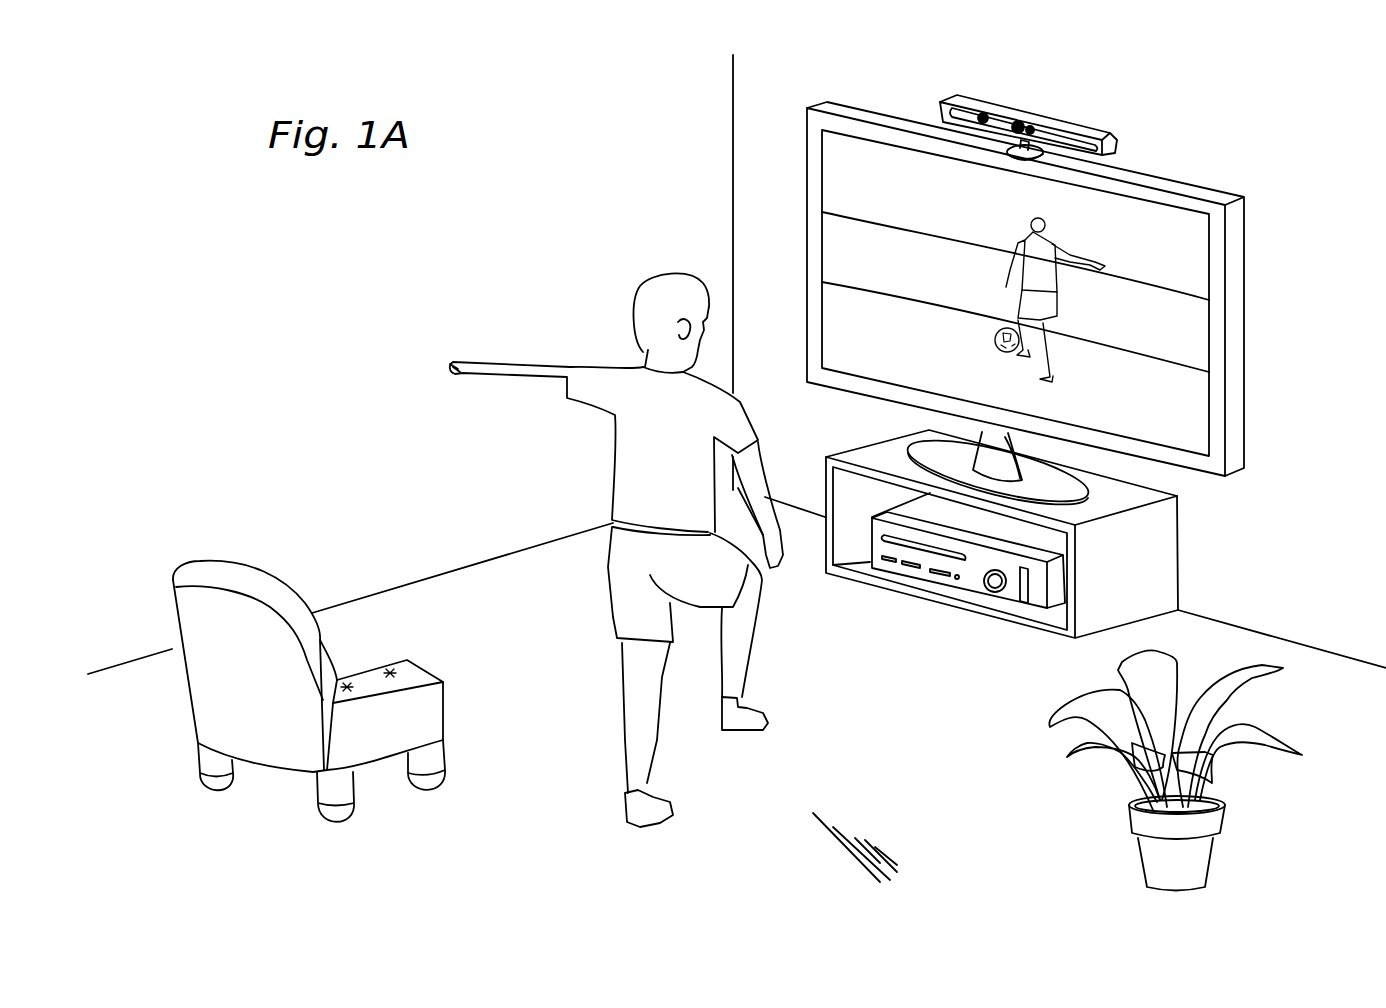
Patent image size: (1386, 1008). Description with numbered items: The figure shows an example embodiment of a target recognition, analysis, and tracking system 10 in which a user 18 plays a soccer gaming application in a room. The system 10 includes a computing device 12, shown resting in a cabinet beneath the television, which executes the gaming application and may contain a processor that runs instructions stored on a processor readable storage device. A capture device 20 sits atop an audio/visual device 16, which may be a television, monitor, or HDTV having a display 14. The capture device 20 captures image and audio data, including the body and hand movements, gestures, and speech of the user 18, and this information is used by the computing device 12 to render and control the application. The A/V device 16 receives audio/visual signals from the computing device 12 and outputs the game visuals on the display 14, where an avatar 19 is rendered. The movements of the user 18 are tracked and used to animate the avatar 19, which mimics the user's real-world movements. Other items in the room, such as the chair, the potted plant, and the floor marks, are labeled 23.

The target recognition, analysis, and tracking system 10 is at (1318, 106).
The computing device 12 is at (972, 593).
The display 14 is at (1212, 393).
The audio/visual device 16 is at (1247, 280).
The user 18 is at (560, 373).
The avatar 19 is at (1067, 255).
The capture device 20 is at (1034, 117).
The non-target objects (chair, plant, floor marks) 23 is at (217, 562).